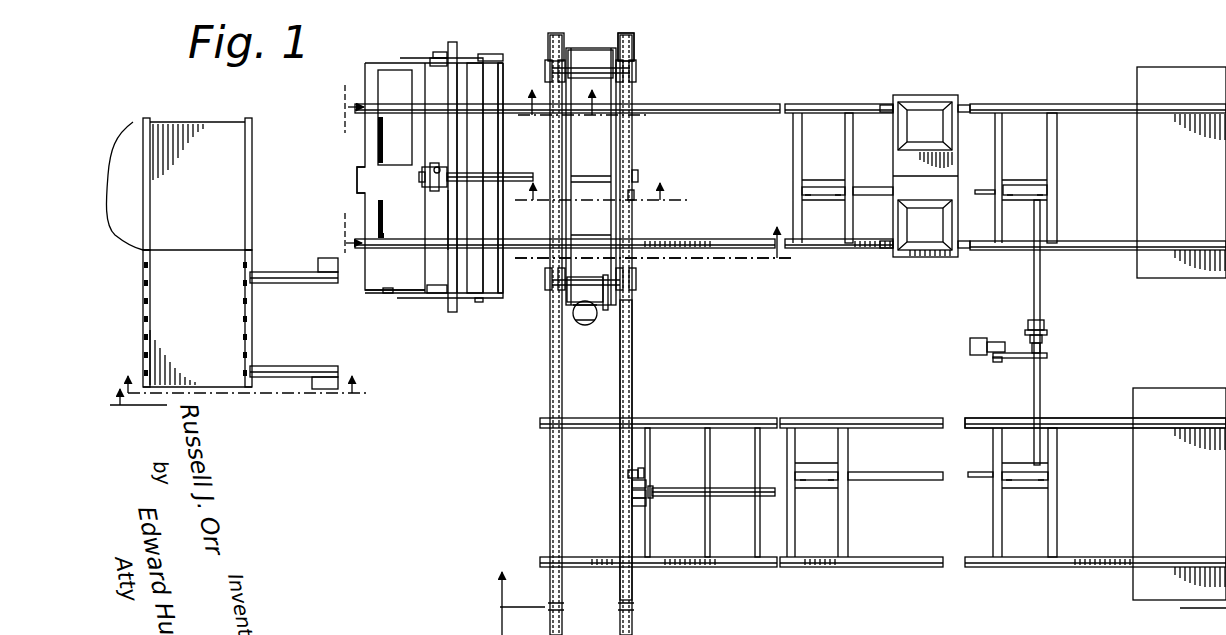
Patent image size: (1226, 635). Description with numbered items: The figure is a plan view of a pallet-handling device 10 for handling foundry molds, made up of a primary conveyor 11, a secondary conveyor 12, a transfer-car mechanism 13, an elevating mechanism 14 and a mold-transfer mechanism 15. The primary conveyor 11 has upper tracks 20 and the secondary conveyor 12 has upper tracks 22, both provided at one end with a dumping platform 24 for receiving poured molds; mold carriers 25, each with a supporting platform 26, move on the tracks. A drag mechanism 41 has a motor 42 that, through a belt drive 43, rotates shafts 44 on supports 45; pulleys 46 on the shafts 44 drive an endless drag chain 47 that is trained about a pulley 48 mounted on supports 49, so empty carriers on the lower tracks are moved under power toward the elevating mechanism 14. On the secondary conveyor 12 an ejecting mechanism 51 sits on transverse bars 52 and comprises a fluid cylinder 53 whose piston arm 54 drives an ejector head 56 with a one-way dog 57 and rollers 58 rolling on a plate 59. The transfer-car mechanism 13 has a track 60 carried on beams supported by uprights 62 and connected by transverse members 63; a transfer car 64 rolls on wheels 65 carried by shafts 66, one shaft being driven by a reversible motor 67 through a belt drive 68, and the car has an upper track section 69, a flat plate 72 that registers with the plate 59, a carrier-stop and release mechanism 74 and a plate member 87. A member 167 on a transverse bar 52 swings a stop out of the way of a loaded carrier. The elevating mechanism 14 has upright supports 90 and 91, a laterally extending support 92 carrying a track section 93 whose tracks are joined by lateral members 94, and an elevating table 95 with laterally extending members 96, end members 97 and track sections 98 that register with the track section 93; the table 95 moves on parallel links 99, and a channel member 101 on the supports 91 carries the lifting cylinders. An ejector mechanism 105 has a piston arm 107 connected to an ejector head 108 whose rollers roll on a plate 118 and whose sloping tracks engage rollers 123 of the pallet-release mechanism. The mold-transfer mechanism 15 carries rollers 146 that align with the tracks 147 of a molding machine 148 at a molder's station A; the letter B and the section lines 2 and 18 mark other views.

The primary conveyor 11 is at (704, 261).
The secondary conveyor 12 is at (1084, 417).
The transfer-car mechanism 13 is at (654, 56).
The elevating mechanism 14 is at (428, 347).
The mold-transfer mechanism 15 is at (272, 334).
The upper tracks 20 is at (833, 103).
The upper tracks 22 is at (926, 580).
The dumping platform 24 is at (1211, 192).
The mold carrier 25 is at (952, 90).
The supporting platform 26 is at (944, 180).
The drag mechanism 41 is at (1044, 384).
The motor 42 is at (982, 345).
The belt drive 43 is at (1012, 360).
The shafts 44 is at (1042, 305).
The supports 45 is at (1057, 197).
The pulleys 46 is at (1041, 184).
The drag chain 47 is at (858, 188).
The pulley 48 is at (816, 187).
The supports 49 is at (850, 167).
The ejecting mechanism 51 is at (665, 487).
The transverse bars 52 is at (644, 449).
The fluid cylinder 53 is at (720, 496).
The piston arm 54 is at (651, 498).
The ejector head 56 is at (630, 496).
The one-way dog 57 is at (631, 483).
The rollers 58 is at (631, 503).
The plate 59 is at (628, 470).
The track 60 is at (633, 380).
The uprights 62 is at (562, 33).
The transverse members 63 is at (562, 430).
The transfer car 64 is at (600, 148).
The wheels 65 is at (548, 69).
The shafts 66 is at (593, 72).
The reversible motor 67 is at (587, 325).
The belt drive 68 is at (609, 296).
The upper track section 69 is at (590, 239).
The flat plate 72 is at (604, 173).
The carrier-stop and release mechanism 74 is at (638, 176).
The plate member 87 is at (628, 196).
The upright supports 90 is at (487, 54).
The upright supports 91 is at (440, 53).
The laterally extending support 92 is at (380, 62).
The track section 93 is at (503, 105).
The lateral members 94 is at (475, 118).
The elevating table 95 is at (376, 291).
The laterally extending members 96 is at (365, 139).
The end members 97 is at (388, 294).
The track sections 98 is at (395, 114).
The parallel links 99 is at (426, 62).
The channel member 101 is at (449, 233).
The ejector mechanism 105 is at (524, 173).
The piston arm 107 is at (438, 166).
The ejector head 108 is at (421, 176).
The plate 118 is at (358, 172).
The rollers 123 is at (383, 117).
The rollers 146 is at (243, 321).
The tracks 147 is at (246, 194).
The molding machine 148 is at (133, 121).
The member 167 is at (644, 470).
The molder's station A is at (285, 186).
The block windows B is at (924, 120).
The section line 2 is at (451, 431).
The pallet-handling device 10 is at (244, 373).
The section line 18 is at (602, 207).